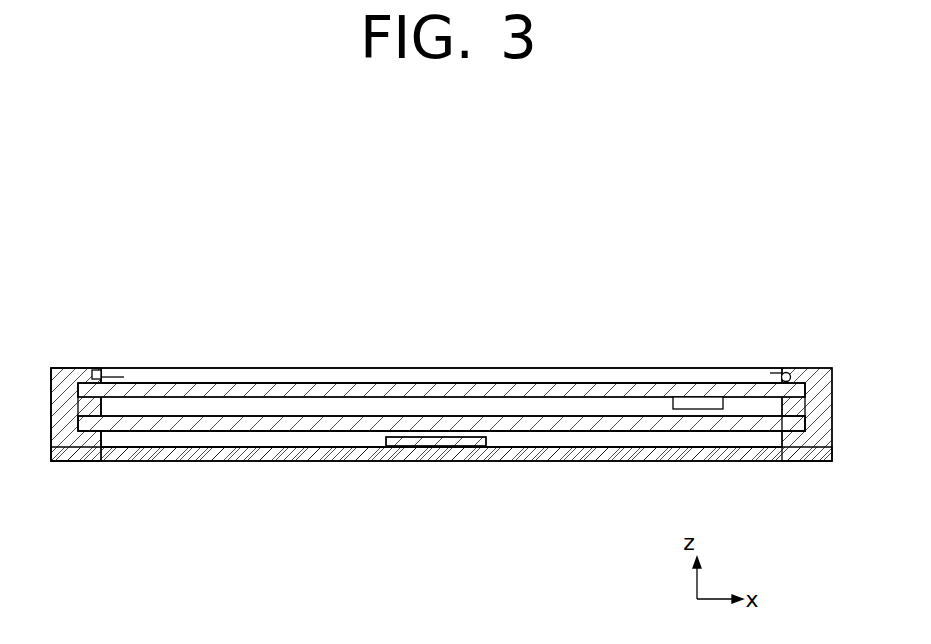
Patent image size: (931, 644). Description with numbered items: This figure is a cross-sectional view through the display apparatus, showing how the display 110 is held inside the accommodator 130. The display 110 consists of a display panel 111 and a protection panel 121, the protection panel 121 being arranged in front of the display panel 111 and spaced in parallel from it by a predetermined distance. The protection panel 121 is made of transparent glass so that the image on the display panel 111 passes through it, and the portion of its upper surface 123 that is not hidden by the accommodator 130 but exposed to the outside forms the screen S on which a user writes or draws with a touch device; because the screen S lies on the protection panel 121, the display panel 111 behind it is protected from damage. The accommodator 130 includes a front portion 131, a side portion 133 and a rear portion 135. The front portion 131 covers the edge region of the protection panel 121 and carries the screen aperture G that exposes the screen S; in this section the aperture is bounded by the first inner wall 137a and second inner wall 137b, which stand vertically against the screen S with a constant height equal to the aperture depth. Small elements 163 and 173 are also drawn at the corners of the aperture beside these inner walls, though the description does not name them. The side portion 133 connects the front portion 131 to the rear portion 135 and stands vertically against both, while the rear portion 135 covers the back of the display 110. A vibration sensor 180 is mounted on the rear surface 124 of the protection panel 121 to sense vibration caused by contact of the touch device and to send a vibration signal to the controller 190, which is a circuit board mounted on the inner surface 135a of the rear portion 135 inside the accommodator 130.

The display 110 is at (768, 500).
The display panel 111 is at (762, 423).
The protection panel 121 is at (793, 420).
The upper surface 123 is at (257, 382).
The rear surface 124 is at (298, 397).
The accommodator 130 is at (108, 470).
The front portion 131 is at (78, 375).
The side portion 133 is at (57, 425).
The rear portion 135 is at (232, 453).
The inner surface 135a is at (517, 436).
The first inner wall 137a is at (778, 374).
The second inner wall 137b is at (124, 377).
The second connector 163 is at (789, 372).
The first connector 173 is at (103, 370).
The vibration sensor 180 is at (683, 402).
The controller 190 is at (405, 442).
The screen S is at (443, 381).
The screen aperture G is at (515, 374).